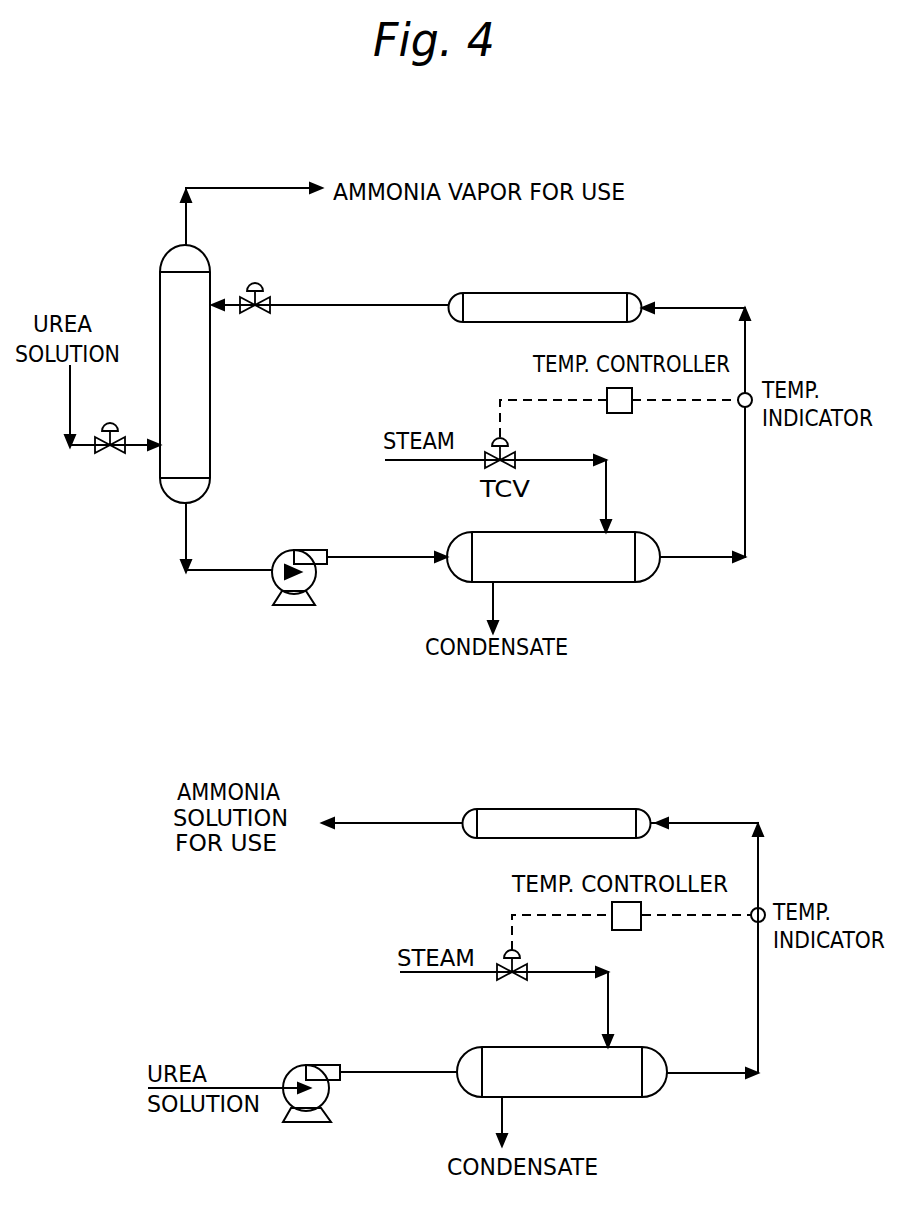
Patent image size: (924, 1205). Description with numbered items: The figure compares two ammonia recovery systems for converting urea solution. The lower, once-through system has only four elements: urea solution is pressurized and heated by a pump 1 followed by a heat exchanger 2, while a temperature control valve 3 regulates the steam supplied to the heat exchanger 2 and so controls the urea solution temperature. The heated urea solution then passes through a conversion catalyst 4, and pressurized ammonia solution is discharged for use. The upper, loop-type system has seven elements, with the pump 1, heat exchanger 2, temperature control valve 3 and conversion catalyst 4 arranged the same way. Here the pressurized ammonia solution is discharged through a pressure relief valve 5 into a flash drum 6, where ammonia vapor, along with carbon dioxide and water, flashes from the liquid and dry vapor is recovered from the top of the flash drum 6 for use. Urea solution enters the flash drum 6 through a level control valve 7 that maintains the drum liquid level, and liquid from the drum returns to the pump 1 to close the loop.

The pump 1 is at (294, 550).
The heat exchanger 2 is at (597, 572).
The temperature control valve 3 is at (507, 436).
The conversion catalyst 4 is at (511, 293).
The pressure relief valve 5 is at (260, 295).
The flash drum 6 is at (210, 397).
The level control valve 7 is at (112, 422).